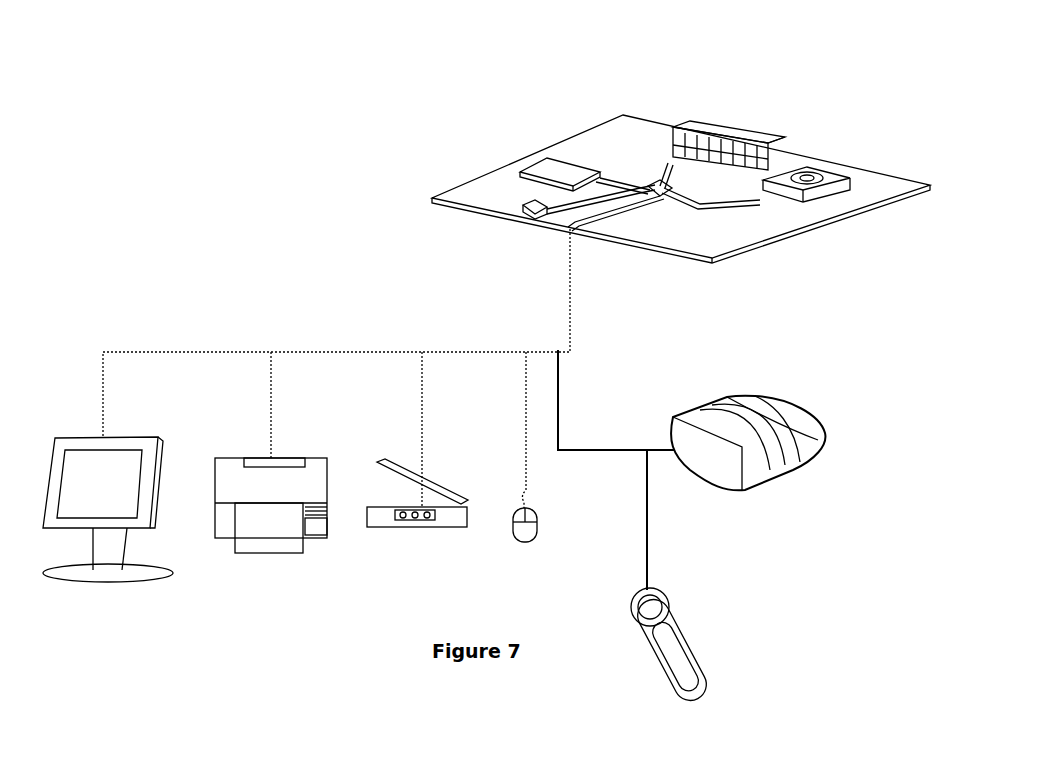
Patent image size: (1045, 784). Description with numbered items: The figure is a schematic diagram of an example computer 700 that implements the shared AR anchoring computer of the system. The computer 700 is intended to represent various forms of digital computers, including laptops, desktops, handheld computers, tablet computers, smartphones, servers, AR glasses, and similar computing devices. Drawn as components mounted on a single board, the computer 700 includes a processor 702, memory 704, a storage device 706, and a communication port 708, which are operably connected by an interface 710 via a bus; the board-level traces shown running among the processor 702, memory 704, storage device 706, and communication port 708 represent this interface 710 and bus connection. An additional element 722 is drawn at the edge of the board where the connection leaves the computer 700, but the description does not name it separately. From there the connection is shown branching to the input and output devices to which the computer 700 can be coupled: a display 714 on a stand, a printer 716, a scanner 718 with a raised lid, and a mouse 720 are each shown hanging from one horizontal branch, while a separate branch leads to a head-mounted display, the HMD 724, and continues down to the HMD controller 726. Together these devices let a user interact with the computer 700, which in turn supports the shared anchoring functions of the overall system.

The computer 700 is at (795, 68).
The processor 702 is at (541, 167).
The memory 704 is at (714, 125).
The storage device 706 is at (848, 193).
The communication port 708 is at (660, 196).
The interface 710 is at (813, 202).
The display 714 is at (130, 585).
The printer 716 is at (268, 553).
The scanner 718 is at (447, 527).
The mouse 720 is at (540, 522).
The I/O connector 722 is at (528, 219).
The HMD 724 is at (775, 490).
The HMD controller 726 is at (715, 675).